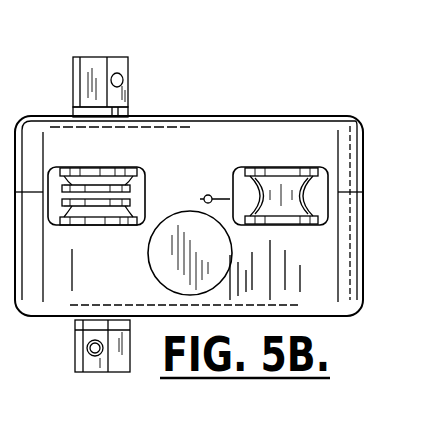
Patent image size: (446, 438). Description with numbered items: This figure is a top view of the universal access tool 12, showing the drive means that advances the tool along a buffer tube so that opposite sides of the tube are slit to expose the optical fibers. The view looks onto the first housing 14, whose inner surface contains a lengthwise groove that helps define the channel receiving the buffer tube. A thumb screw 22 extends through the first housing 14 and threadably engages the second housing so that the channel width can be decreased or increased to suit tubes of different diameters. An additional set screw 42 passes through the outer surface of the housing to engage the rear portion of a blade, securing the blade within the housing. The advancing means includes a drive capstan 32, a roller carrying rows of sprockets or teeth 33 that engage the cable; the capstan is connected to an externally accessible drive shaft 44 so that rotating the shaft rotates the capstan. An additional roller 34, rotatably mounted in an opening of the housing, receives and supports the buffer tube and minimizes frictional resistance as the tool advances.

The universal access tool 12 is at (344, 96).
The first housing 14 is at (351, 162).
The thumb screw 22 is at (217, 263).
The drive capstan 32 is at (118, 182).
The sprockets or teeth 33 is at (78, 190).
The additional roller 34 is at (283, 188).
The additional set screw 42 is at (208, 195).
The drive shaft 44 is at (110, 68).